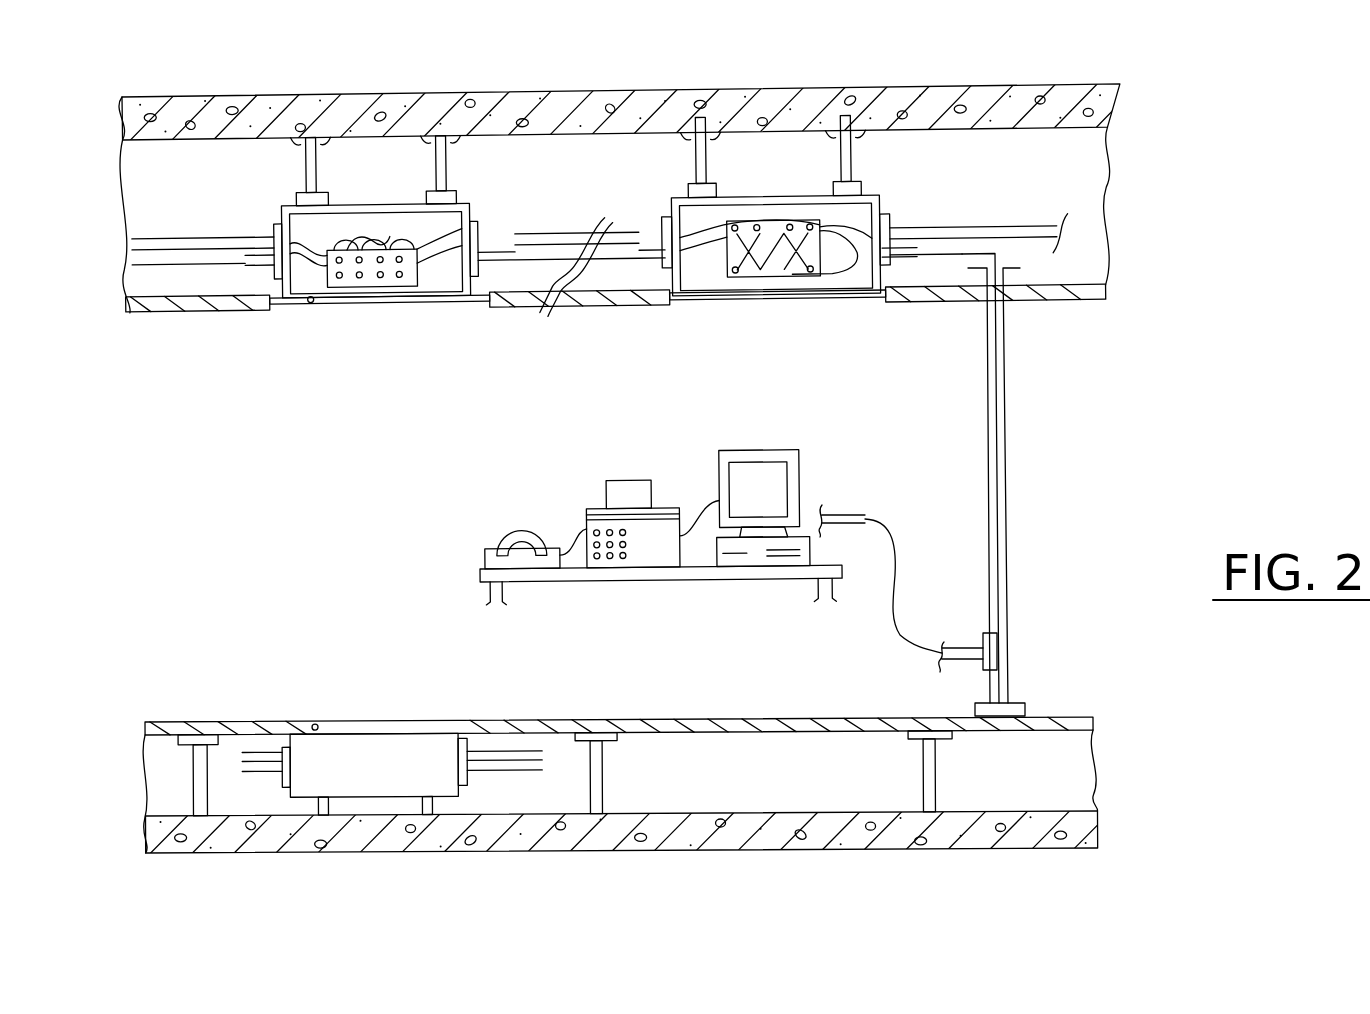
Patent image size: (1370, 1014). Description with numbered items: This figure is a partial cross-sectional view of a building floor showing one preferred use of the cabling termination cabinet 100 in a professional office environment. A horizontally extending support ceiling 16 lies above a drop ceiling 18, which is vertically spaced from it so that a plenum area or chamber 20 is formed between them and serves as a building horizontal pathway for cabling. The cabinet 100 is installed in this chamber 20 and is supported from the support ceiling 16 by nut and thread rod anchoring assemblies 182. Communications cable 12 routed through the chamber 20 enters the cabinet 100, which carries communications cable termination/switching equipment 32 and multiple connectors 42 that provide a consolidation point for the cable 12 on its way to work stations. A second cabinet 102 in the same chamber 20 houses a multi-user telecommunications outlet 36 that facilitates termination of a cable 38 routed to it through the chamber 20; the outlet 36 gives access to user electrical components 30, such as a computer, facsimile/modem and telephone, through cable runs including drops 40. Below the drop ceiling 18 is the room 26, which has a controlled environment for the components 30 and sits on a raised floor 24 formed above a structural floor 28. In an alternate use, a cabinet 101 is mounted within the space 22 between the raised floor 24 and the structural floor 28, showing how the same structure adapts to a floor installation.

The communications cables 12 is at (213, 254).
The support ceiling 16 is at (558, 96).
The drop ceiling 18 is at (202, 304).
The plenum area or chamber 20 is at (1084, 178).
The space 22 is at (1068, 763).
The raised floor 24 is at (540, 724).
The room 26 is at (392, 593).
The structural floor 28 is at (950, 837).
The electrical components 30 is at (795, 426).
The communications cable termination/switching equipment 32 is at (374, 228).
The multi-user telecommunications outlet 36 is at (778, 289).
The cable 38 is at (652, 200).
The drops 40 is at (1008, 507).
The connectors 42 is at (425, 284).
The cabling termination cabinet 100 is at (484, 201).
The cabinet 101 is at (340, 772).
The cabinet 102 is at (891, 196).
The nut and thread rod anchoring assemblies 182 is at (304, 174).